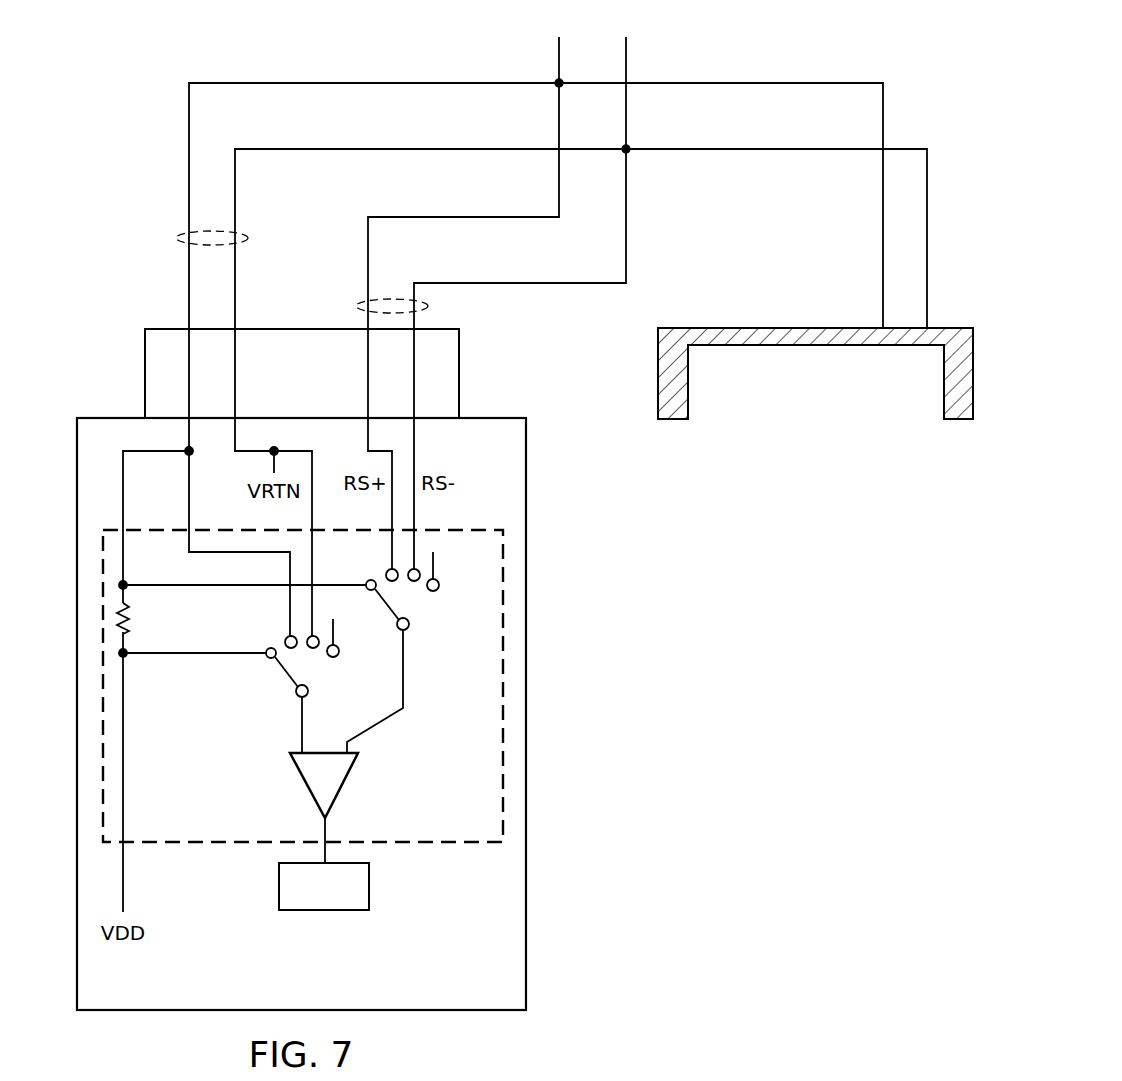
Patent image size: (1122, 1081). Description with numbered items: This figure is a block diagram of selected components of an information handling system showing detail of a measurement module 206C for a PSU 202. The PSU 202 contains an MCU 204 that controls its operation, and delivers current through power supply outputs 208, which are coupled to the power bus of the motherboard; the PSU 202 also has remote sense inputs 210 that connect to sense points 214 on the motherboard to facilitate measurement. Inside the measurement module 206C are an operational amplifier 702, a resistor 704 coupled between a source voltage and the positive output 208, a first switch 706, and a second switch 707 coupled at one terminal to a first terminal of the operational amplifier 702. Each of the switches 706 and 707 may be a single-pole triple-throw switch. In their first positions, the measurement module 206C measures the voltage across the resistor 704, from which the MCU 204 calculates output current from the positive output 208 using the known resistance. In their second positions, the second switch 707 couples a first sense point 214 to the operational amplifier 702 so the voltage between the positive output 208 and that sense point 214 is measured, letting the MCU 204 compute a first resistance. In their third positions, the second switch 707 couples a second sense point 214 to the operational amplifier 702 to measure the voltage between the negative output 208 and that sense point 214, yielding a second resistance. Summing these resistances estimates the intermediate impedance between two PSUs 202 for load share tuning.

The PSU 202 is at (282, 989).
The microcontroller unit (MCU) 204 is at (369, 887).
The measurement module 206C is at (232, 848).
The power supply outputs 208 is at (178, 240).
The remote sense inputs 210 is at (356, 306).
The sense points 214 is at (557, 81).
The operational amplifier 702 is at (342, 790).
The resistor 704 is at (130, 615).
The first switch 706 is at (287, 672).
The second switch 707 is at (392, 605).